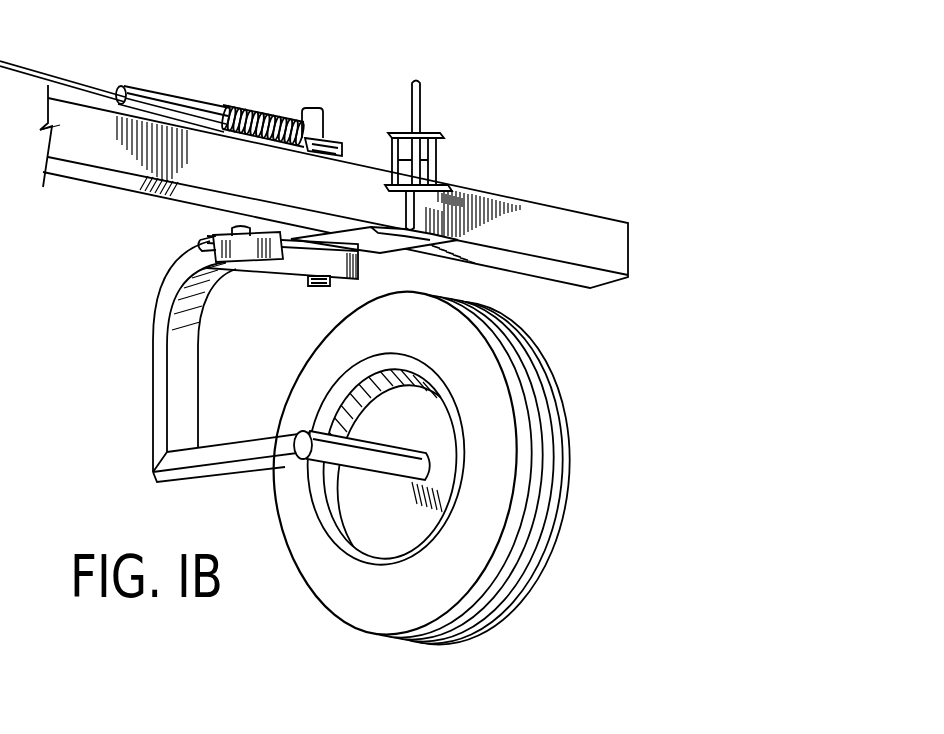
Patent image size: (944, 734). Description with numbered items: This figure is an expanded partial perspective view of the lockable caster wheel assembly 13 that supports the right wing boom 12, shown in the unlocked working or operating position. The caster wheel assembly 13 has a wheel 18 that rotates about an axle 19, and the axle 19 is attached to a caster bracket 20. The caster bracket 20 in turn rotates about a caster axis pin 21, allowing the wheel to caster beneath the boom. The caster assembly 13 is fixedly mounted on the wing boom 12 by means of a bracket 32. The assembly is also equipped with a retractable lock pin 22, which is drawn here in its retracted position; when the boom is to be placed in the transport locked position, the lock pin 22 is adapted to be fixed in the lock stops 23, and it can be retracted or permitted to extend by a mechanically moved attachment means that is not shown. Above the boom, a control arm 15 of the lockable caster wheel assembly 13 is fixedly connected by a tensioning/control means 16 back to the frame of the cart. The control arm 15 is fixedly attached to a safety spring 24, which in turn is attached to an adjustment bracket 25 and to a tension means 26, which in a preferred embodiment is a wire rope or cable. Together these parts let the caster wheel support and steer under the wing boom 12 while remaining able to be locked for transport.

The right wing boom 12 is at (607, 225).
The lockable caster wheel assembly 13 is at (459, 467).
The control arm 15 is at (317, 117).
The tensioning/control means 16 is at (146, 78).
The wheel 18 is at (550, 378).
The axle 19 is at (297, 464).
The caster bracket 20 is at (152, 417).
The caster axis pin 21 is at (317, 289).
The retractable lock pin 22 is at (480, 210).
The lock stops 23 is at (200, 243).
The safety spring 24 is at (262, 110).
The adjustment bracket 25 is at (173, 110).
The tension means 26 is at (82, 80).
The bracket 32 is at (358, 228).